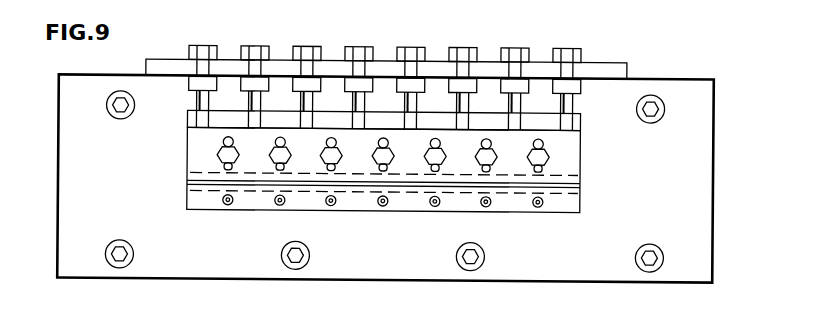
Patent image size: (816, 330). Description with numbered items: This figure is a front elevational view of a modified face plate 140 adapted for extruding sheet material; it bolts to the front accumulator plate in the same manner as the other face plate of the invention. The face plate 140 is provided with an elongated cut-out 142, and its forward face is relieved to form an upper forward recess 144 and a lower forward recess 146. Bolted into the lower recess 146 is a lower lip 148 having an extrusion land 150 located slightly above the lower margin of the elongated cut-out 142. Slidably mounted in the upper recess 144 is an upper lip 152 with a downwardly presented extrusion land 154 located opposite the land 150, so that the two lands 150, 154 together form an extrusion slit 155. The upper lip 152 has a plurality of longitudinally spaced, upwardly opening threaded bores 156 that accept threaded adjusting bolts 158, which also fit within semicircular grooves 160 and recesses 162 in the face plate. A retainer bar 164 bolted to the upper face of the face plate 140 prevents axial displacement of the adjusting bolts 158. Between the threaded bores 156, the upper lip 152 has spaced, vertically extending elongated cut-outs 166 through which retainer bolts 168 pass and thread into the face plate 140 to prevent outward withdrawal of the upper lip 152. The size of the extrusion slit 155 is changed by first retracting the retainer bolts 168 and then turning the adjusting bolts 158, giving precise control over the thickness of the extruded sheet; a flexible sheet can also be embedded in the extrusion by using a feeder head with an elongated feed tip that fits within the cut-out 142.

The face plate 140 is at (716, 183).
The elongated cut-out 142 is at (187, 184).
The upper forward recess 144 is at (187, 118).
The lower forward recess 146 is at (222, 211).
The lower lip 148 is at (360, 207).
The extrusion land 150 is at (422, 192).
The upper lip 152 is at (582, 154).
The extrusion land 154 is at (575, 192).
The extrusion slit 155 is at (512, 187).
The threaded bores 156 is at (227, 130).
The adjusting bolts 158 is at (573, 48).
The semicircular grooves 160 is at (574, 107).
The recesses 162 is at (598, 82).
The retainer bar 164 is at (157, 60).
The elongated cut-outs 166 is at (544, 143).
The retainer bolts 168 is at (545, 160).